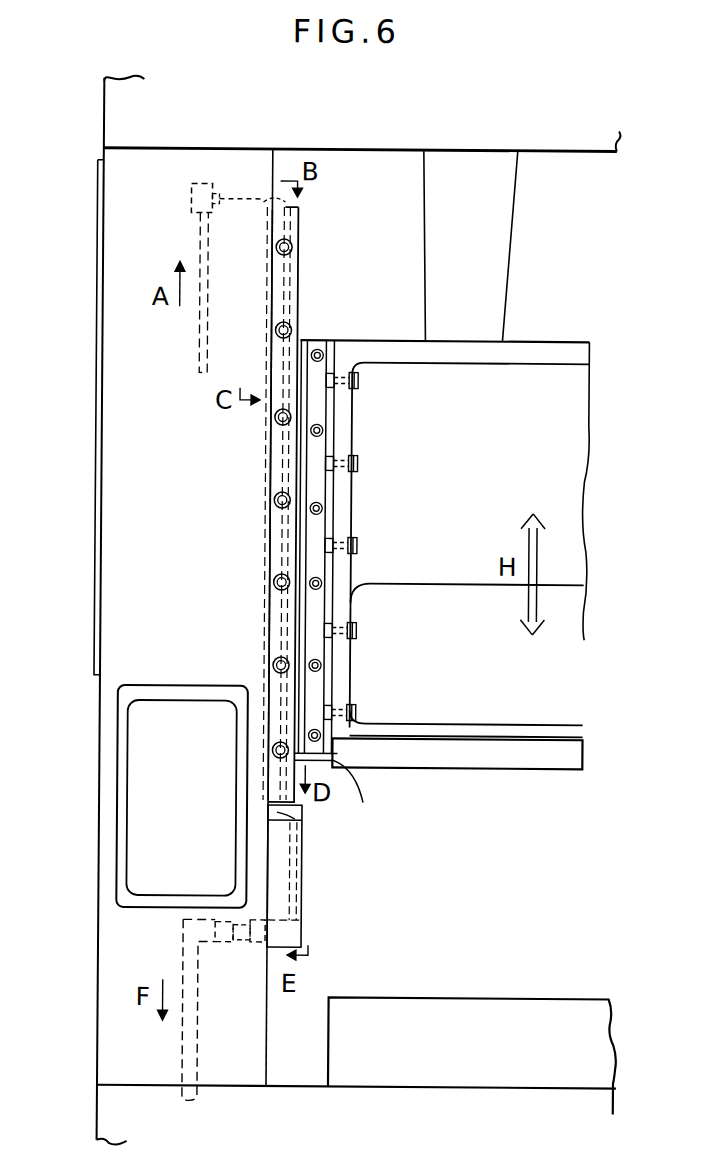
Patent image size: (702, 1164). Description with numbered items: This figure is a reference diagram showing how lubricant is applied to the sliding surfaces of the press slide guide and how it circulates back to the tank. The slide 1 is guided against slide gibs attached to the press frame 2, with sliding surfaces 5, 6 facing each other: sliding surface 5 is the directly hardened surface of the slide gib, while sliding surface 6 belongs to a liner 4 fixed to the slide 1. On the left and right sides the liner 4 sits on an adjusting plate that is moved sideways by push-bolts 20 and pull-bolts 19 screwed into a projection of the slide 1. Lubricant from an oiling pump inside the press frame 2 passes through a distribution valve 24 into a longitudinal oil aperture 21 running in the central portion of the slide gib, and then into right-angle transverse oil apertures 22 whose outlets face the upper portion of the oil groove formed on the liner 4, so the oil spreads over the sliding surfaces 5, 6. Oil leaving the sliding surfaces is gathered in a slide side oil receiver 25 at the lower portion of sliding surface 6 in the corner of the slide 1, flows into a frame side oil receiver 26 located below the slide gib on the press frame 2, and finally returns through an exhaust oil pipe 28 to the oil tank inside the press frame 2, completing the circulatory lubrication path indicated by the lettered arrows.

The slide 1 is at (574, 432).
The press frame 2 is at (100, 486).
The liner 4 is at (306, 352).
The sliding surface 5 is at (244, 504).
The sliding surface 6 is at (296, 453).
The pull-bolt 19 is at (302, 498).
The push-bolt 20 is at (275, 584).
The longitudinal oil aperture 21 is at (277, 497).
The transverse oil aperture 22 is at (291, 396).
The distribution valve 24 is at (190, 196).
The slide side oil receiver 25 is at (323, 764).
The frame side oil receiver 26 is at (285, 897).
The exhaust oil pipe 28 is at (240, 946).